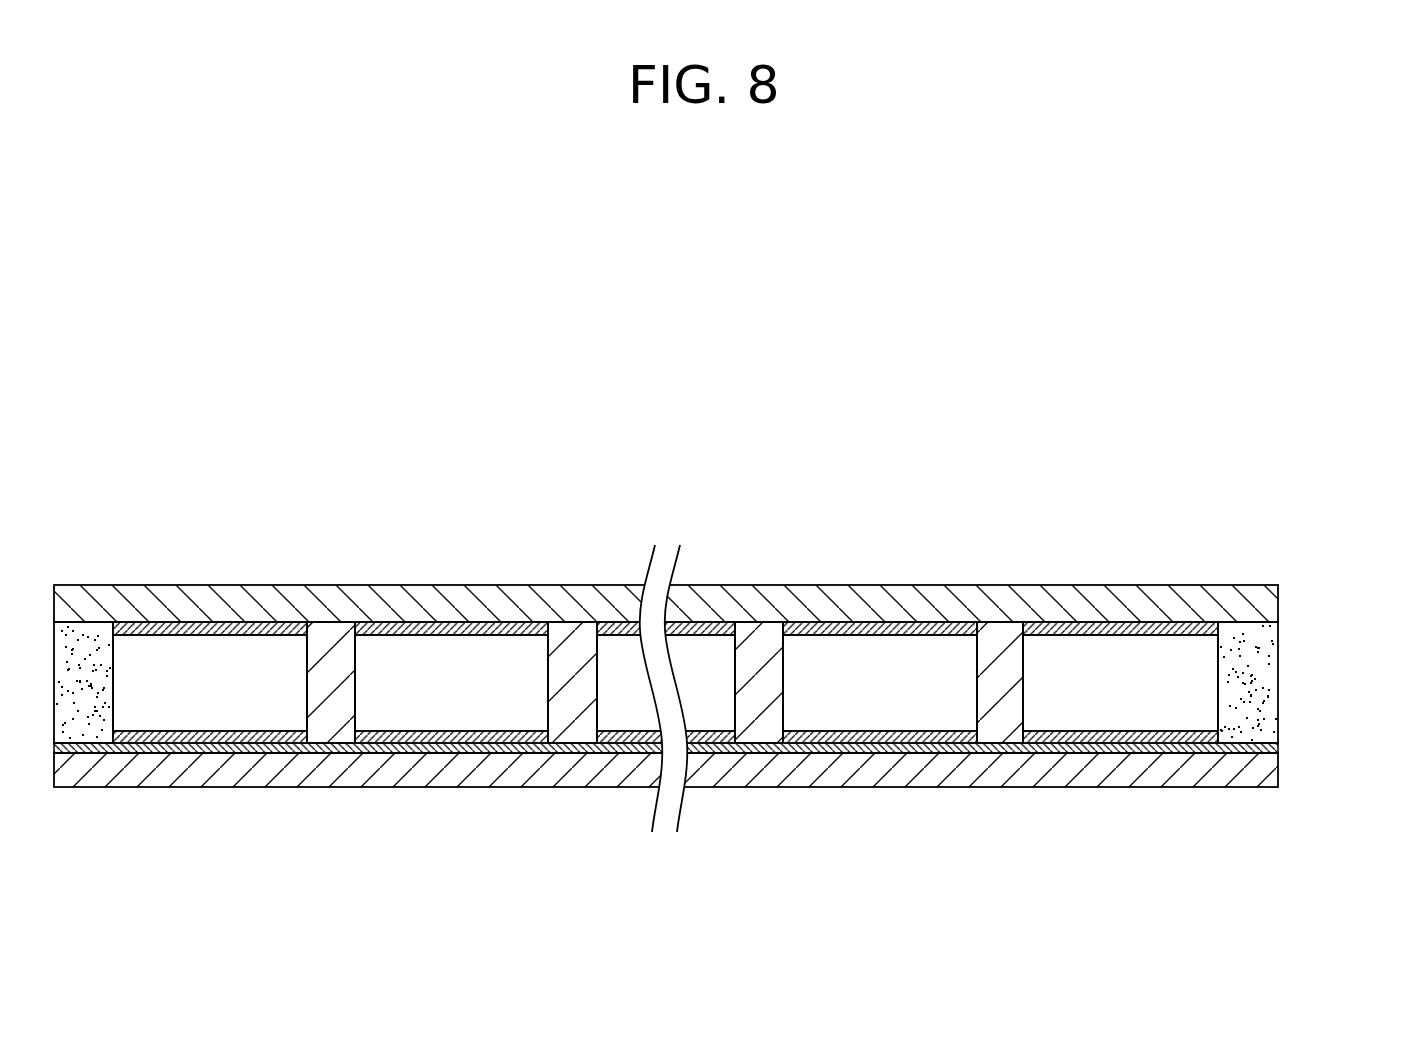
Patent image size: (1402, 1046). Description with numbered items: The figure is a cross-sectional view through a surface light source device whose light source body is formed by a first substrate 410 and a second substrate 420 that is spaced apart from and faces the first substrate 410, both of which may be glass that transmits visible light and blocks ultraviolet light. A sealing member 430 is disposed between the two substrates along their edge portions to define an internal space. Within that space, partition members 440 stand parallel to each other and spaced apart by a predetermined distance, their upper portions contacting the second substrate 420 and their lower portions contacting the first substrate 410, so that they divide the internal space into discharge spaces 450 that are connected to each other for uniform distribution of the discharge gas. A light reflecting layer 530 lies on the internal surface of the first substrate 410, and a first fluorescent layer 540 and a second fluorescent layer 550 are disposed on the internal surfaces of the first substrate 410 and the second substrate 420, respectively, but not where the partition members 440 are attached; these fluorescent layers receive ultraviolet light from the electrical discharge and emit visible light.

The first substrate 410 is at (1265, 770).
The second substrate 420 is at (1265, 603).
The sealing member 430 is at (1263, 680).
The partition members 440 is at (1002, 632).
The discharge spaces 450 is at (892, 652).
The light reflecting layer 530 is at (392, 755).
The first fluorescent layer 540 is at (275, 738).
The second fluorescent layer 550 is at (273, 622).